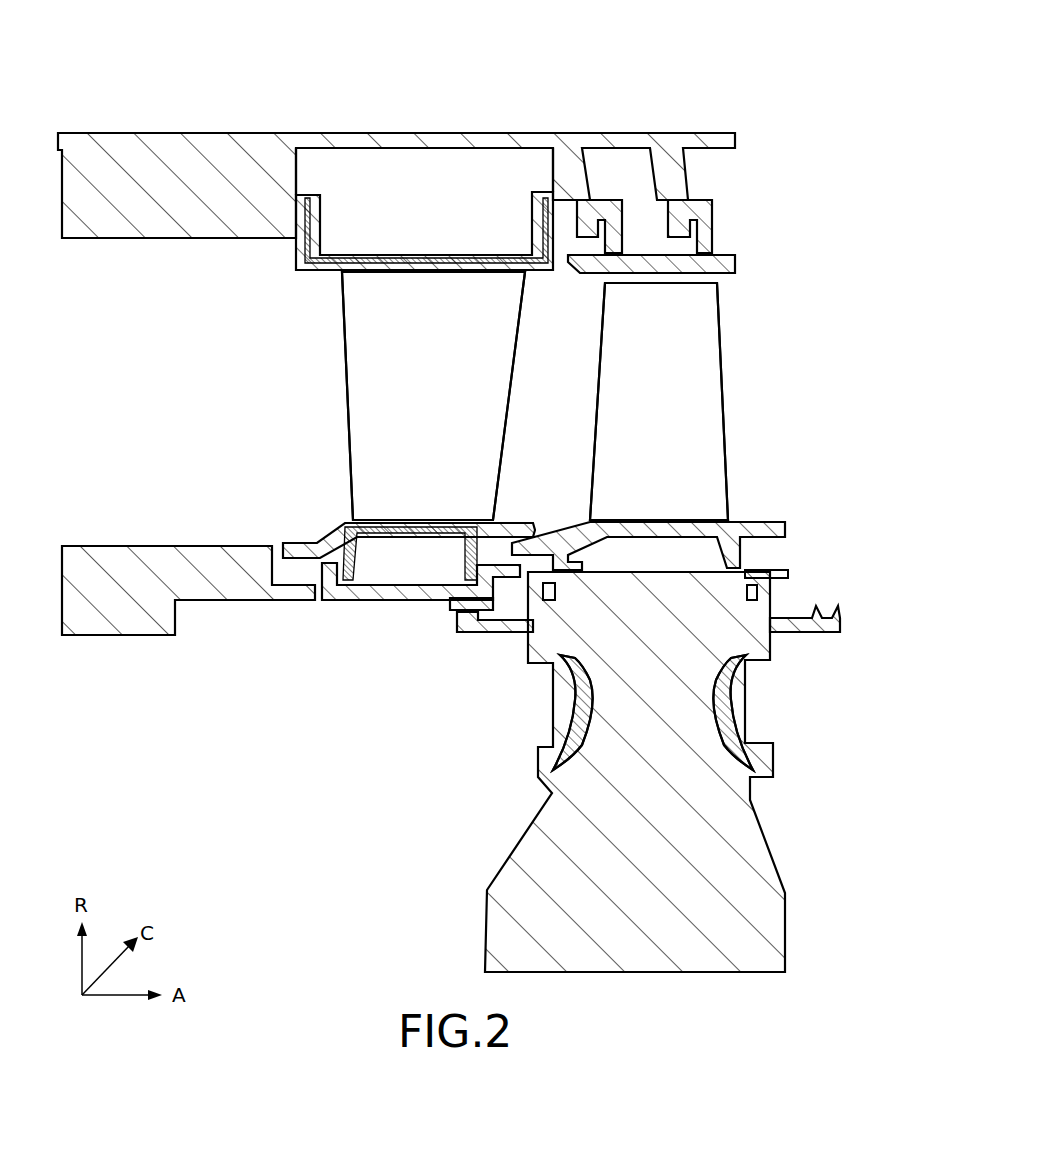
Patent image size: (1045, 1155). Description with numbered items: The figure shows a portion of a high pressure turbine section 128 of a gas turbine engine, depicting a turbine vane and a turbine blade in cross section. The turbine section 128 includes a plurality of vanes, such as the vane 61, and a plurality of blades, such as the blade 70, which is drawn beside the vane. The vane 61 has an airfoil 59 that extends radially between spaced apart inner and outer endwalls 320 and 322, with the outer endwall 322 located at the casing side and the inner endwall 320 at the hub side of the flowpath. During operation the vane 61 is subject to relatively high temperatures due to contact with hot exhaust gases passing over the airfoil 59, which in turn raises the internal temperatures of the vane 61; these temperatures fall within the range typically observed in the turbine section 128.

The turbine section 128 is at (652, 94).
The vane 61 is at (342, 384).
The airfoil 59 is at (441, 393).
The outer endwall 322 is at (552, 274).
The inner endwall 320 is at (540, 522).
The blade 70 is at (730, 357).